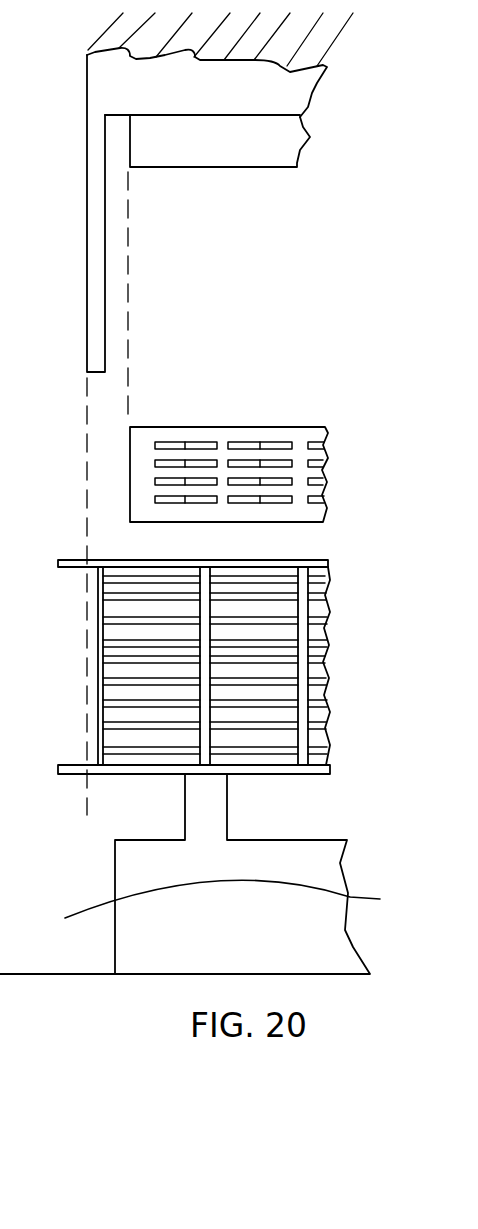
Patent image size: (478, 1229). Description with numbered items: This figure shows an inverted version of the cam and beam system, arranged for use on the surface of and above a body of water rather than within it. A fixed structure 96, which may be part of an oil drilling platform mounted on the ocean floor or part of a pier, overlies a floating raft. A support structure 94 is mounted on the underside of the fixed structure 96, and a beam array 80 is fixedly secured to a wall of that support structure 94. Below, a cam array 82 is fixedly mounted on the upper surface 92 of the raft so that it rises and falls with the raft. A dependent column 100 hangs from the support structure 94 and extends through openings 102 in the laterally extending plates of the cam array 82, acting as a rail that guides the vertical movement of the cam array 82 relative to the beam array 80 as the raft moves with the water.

The fixed structure 96 is at (130, 33).
The support structure 94 is at (282, 92).
The dependent column 100 is at (93, 268).
The beam array 80 is at (241, 432).
The opening 102 is at (78, 558).
The cam array 82 is at (120, 686).
The upper surface 92 is at (306, 842).